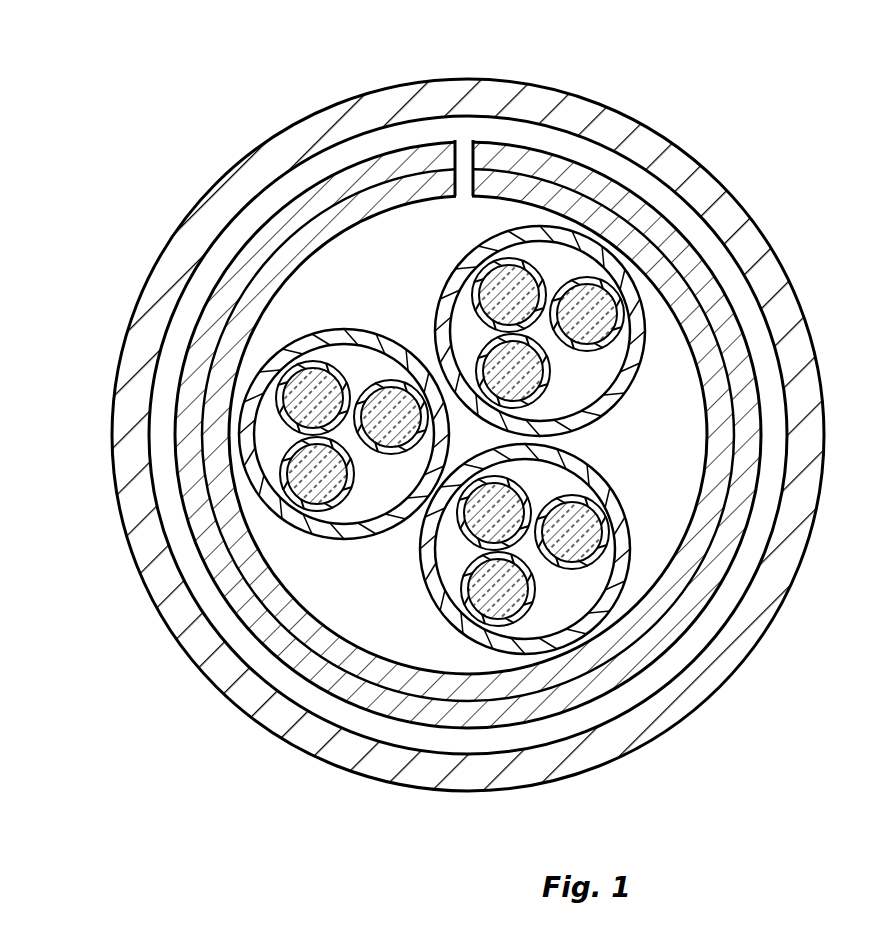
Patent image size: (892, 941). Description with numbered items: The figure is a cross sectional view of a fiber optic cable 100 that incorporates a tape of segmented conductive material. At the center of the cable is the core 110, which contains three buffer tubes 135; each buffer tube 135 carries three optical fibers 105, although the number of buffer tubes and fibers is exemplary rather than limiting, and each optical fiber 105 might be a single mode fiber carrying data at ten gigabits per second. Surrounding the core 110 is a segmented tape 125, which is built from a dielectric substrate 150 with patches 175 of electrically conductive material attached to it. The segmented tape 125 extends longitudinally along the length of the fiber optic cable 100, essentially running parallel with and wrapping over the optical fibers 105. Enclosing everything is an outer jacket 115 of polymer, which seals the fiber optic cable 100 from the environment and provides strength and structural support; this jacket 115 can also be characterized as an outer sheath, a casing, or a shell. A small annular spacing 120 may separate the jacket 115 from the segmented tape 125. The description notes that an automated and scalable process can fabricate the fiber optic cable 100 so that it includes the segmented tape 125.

The fiber optic cable 100 is at (132, 110).
The optical fiber 105 is at (555, 268).
The core 110 is at (667, 432).
The outer jacket 115 is at (767, 585).
The annular spacing 120 is at (492, 740).
The segmented tape 125 is at (458, 135).
The buffer tube 135 is at (645, 318).
The dielectric substrate 150 is at (440, 180).
The patch of electrically conductive material 175 is at (446, 150).